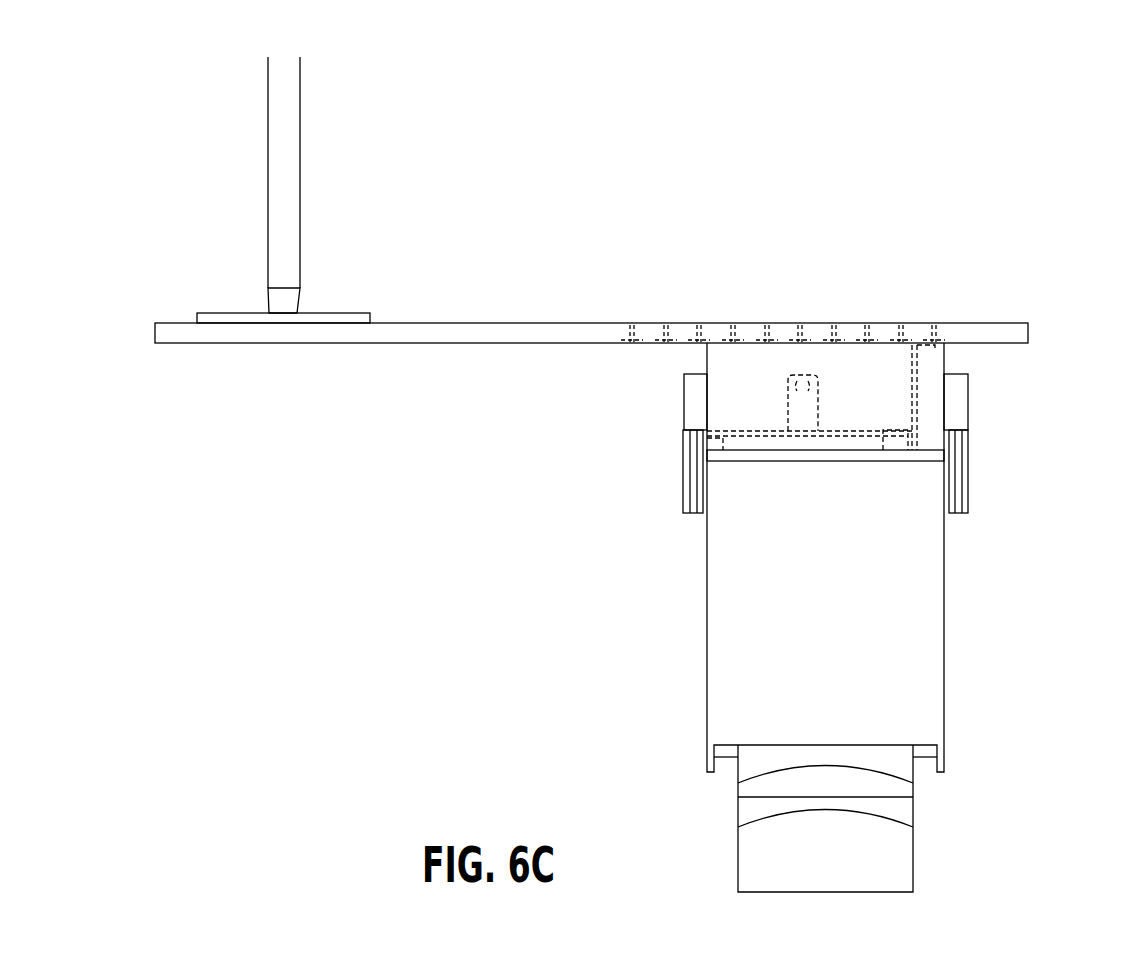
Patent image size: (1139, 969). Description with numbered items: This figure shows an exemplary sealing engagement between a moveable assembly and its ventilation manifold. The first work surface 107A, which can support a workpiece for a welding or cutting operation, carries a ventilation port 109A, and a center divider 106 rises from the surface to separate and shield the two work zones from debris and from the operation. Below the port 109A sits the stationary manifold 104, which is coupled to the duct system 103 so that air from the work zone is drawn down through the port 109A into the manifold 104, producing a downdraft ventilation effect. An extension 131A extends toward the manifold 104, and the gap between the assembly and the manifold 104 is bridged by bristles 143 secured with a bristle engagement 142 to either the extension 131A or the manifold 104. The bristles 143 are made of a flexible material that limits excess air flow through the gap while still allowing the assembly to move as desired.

The duct system 103 is at (895, 848).
The manifold 104 is at (955, 560).
The center divider 106 is at (298, 177).
The first work surface 107A is at (488, 300).
The ventilation port 109A is at (785, 322).
The extension 131A is at (928, 390).
The bristle engagement 142 is at (695, 403).
The bristles 143 is at (697, 457).